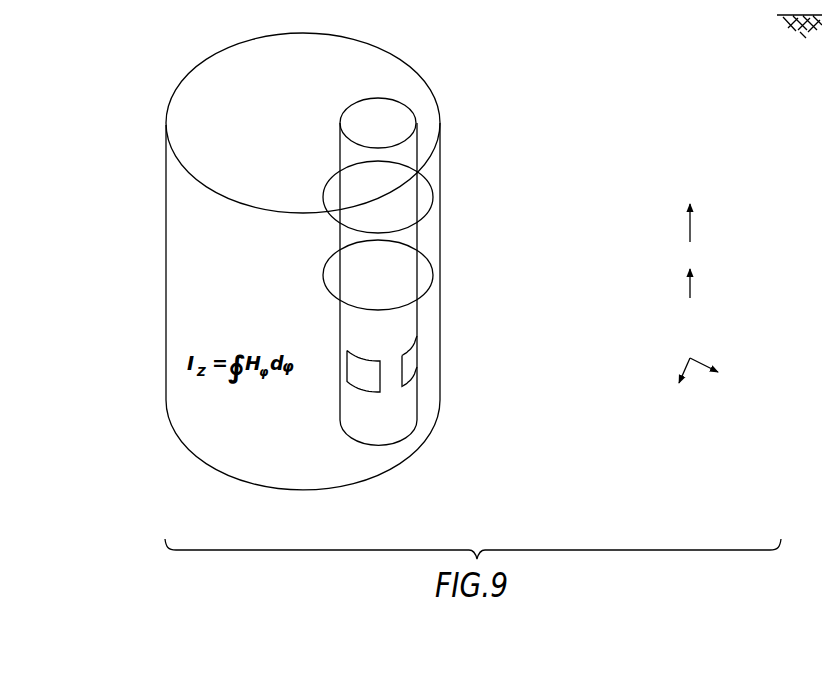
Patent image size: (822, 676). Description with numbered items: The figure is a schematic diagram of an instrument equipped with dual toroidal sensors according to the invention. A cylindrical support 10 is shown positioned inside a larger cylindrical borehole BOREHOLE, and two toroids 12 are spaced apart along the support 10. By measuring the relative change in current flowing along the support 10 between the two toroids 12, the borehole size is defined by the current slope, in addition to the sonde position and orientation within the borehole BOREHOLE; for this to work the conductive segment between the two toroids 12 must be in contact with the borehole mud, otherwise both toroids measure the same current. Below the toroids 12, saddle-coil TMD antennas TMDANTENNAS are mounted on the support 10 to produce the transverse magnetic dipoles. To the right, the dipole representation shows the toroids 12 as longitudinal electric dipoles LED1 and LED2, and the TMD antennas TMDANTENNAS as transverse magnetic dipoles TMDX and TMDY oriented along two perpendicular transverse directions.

The support 10 is at (422, 123).
The toroids 12 is at (436, 272).
The borehole BOREHOLE is at (443, 384).
The TMD antennas TMDANTENNAS is at (424, 360).
The longitudinal electric dipole LED1 is at (722, 283).
The longitudinal electric dipole LED2 is at (722, 223).
The transverse magnetic dipole X TMDX is at (740, 375).
The transverse magnetic dipole Y TMDY is at (683, 386).